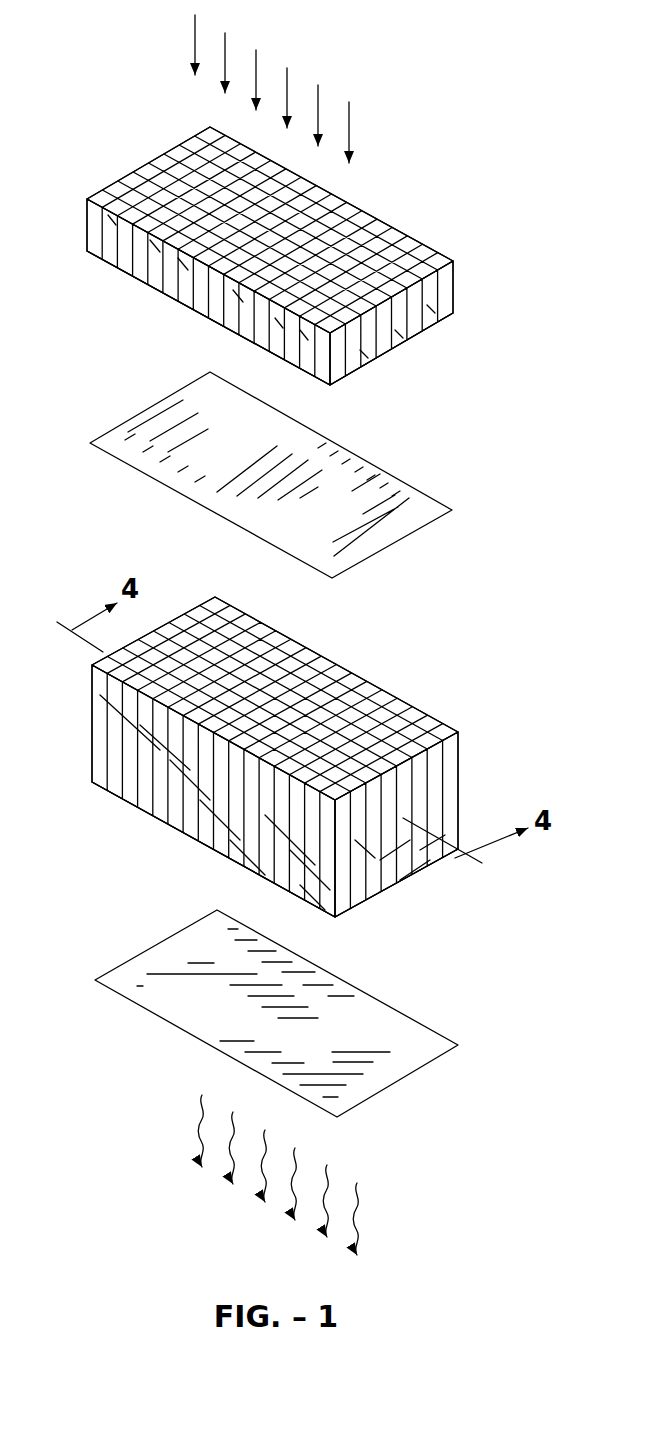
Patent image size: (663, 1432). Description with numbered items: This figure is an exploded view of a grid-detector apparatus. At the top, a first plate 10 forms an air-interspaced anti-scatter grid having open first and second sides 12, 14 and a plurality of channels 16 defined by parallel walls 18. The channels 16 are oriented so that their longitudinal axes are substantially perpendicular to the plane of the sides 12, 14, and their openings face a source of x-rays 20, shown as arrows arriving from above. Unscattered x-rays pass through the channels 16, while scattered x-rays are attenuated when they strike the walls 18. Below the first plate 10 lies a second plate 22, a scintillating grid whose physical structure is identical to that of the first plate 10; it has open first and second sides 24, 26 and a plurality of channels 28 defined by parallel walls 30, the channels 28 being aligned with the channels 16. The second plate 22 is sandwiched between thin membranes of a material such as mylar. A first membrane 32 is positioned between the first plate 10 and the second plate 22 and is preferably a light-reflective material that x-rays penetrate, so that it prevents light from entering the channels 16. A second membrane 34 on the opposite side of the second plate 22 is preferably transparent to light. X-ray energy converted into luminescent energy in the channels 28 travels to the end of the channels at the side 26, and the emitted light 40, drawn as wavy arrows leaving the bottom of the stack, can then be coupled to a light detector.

The first plate 10 is at (478, 285).
The first side 12 is at (447, 230).
The second side 14 is at (416, 358).
The channels 16 is at (110, 257).
The parallel walls 18 is at (138, 172).
The x-rays 20 is at (353, 133).
The second plate 22 is at (480, 750).
The first side 24 is at (450, 696).
The second side 26 is at (394, 900).
The channels 28 is at (132, 793).
The parallel walls 30 is at (208, 607).
The first membrane 32 is at (158, 412).
The second membrane 34 is at (130, 968).
The emitted light 40 is at (358, 1227).